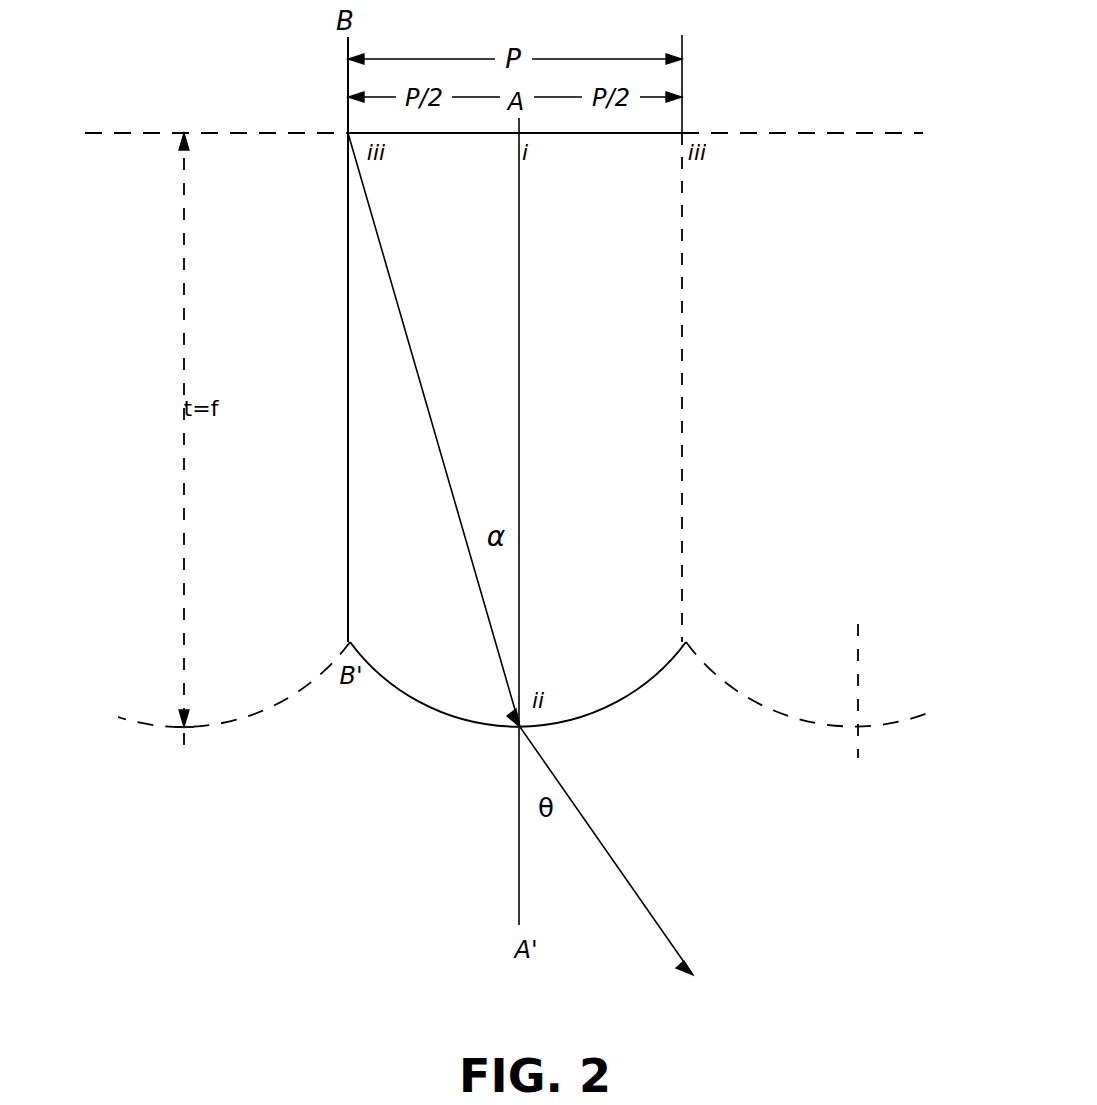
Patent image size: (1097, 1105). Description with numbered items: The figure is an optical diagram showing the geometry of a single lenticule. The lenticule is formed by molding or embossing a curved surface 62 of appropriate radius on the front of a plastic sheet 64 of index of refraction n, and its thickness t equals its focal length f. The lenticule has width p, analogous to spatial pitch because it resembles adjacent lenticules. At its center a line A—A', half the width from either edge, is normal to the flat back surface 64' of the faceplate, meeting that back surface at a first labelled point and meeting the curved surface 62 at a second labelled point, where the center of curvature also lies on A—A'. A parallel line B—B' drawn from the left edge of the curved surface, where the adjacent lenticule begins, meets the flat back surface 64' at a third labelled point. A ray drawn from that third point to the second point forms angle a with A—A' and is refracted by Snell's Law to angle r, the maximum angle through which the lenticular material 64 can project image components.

The curved surface 62 is at (424, 704).
The plastic sheet 64 is at (744, 387).
The flat back surface 64' is at (802, 79).